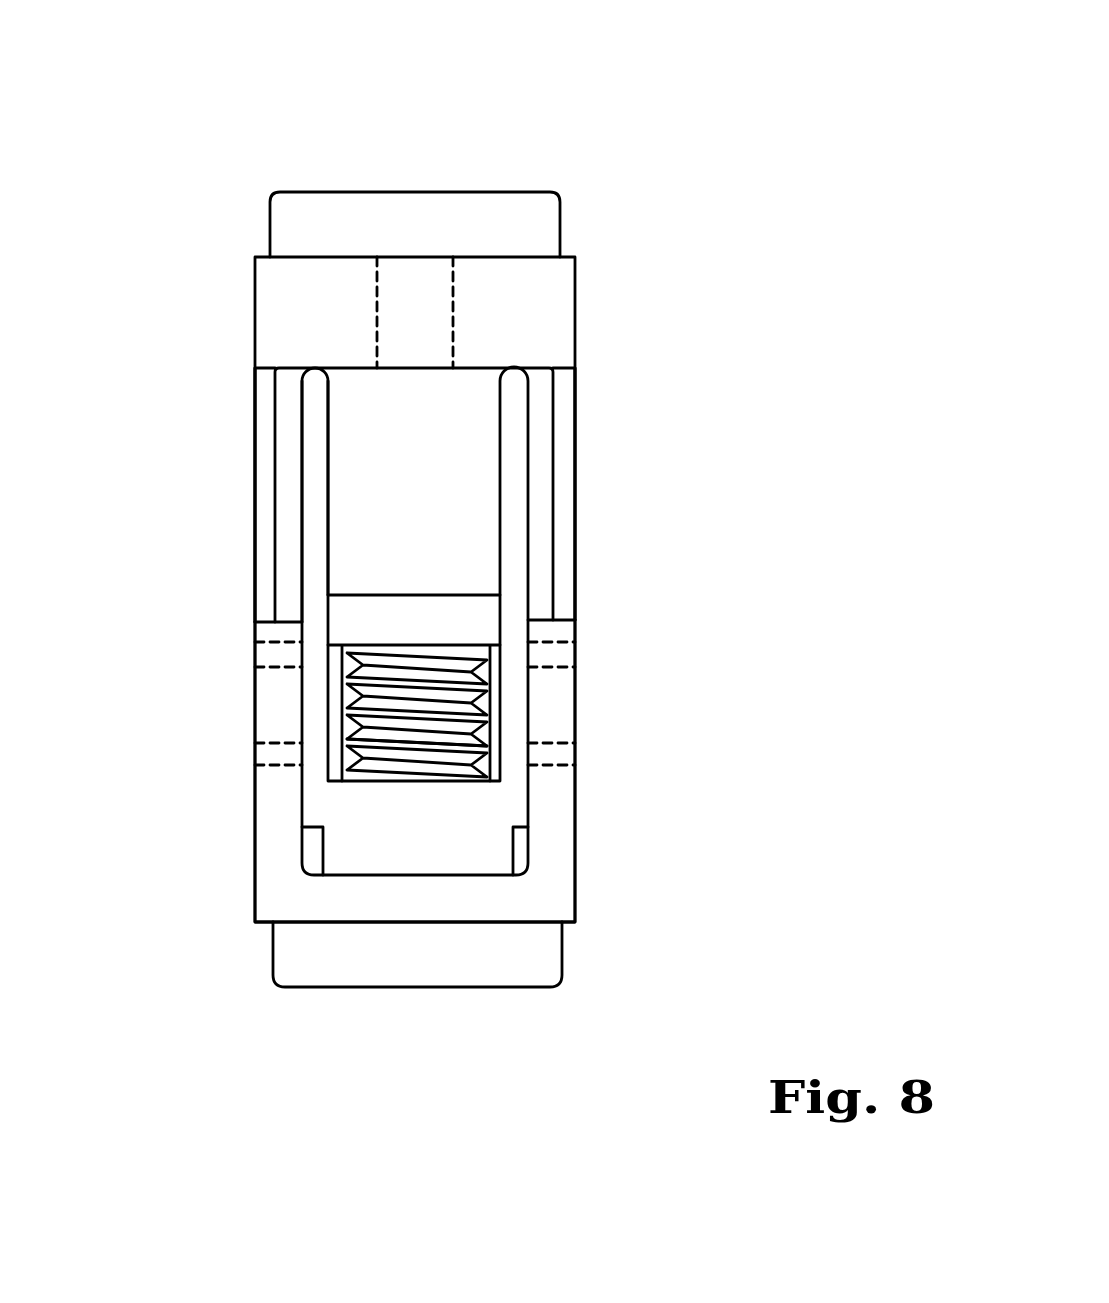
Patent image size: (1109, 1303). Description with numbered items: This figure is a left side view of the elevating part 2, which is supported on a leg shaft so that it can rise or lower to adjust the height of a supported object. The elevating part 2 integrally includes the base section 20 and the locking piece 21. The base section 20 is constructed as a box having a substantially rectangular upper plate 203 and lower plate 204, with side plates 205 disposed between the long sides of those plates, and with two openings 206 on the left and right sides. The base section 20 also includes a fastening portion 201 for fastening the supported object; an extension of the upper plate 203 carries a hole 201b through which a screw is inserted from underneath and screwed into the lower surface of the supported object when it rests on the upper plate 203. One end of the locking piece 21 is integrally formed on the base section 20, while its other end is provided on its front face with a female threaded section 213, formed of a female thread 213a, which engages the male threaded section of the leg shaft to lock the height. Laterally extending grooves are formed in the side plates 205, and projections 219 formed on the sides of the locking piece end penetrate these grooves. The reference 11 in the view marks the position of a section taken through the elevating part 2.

The elevating part 2 is at (746, 176).
The base section 20 is at (577, 797).
The locking piece 21 is at (438, 520).
The fastening portion 201 is at (527, 318).
The hole 201b is at (407, 298).
The upper plate 203 is at (520, 253).
The lower plate 204 is at (458, 875).
The side plates 205 is at (255, 513).
The openings 206 is at (317, 587).
The female threaded section 213 is at (413, 712).
The female thread 213a is at (397, 740).
The projections 219 is at (277, 706).
The section line 11- 11 is at (366, 70).